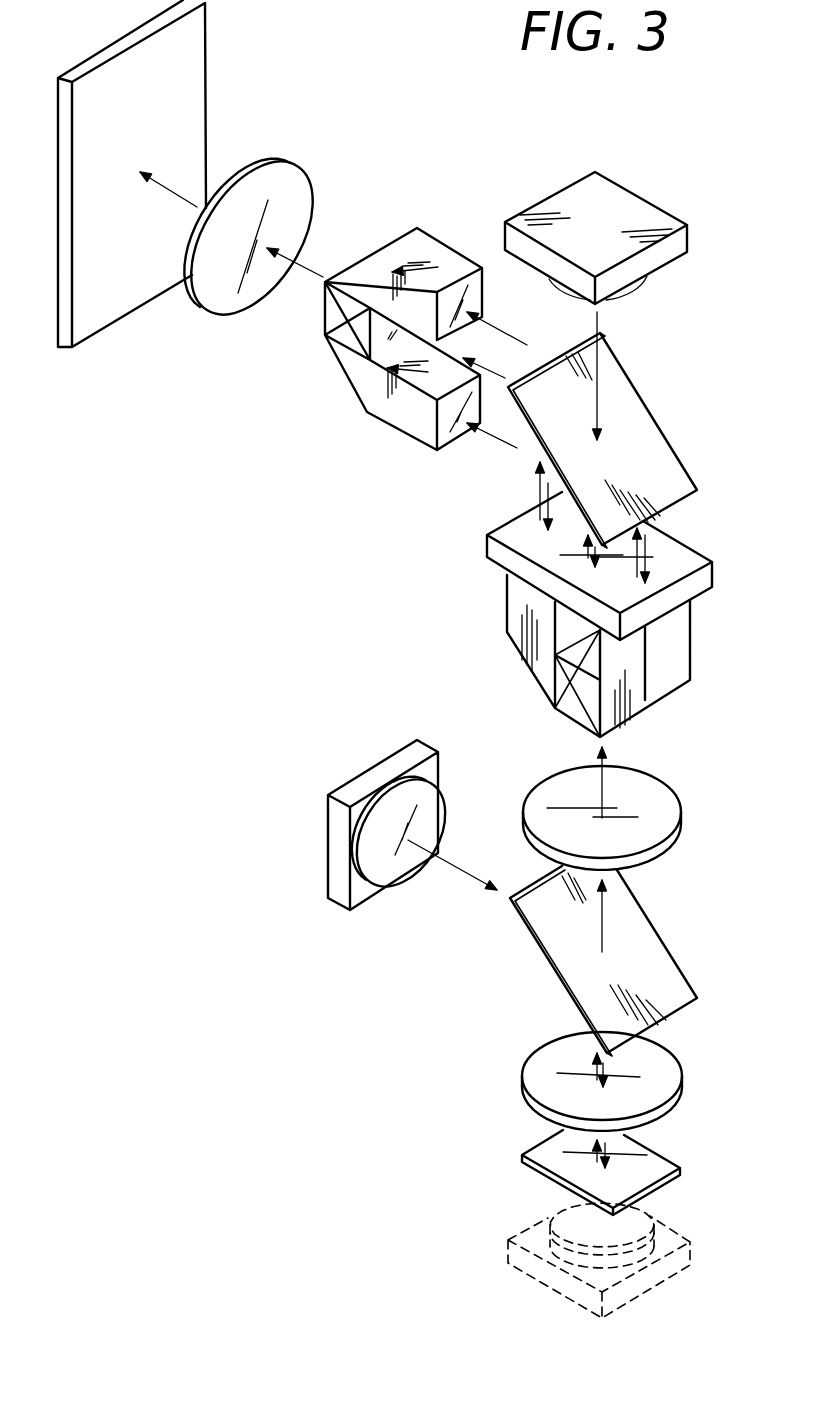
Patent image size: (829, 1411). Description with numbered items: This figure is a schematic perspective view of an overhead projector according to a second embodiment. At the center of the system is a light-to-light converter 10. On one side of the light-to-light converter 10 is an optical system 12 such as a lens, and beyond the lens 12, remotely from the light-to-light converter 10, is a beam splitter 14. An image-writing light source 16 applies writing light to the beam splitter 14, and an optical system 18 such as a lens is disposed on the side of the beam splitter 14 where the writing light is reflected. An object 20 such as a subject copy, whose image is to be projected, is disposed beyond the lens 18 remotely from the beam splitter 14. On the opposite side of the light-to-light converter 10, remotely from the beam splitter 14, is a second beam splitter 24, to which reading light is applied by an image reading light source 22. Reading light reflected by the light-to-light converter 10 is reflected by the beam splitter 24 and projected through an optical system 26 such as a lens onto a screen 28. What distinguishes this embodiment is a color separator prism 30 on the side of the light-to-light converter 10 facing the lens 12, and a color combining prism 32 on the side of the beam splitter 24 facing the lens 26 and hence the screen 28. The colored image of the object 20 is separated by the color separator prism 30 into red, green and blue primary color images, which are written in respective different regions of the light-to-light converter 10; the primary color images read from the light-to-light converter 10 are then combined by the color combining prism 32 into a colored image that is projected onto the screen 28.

The light-to-light converter 10 is at (682, 553).
The optical system (lens) 12 is at (642, 790).
The beam splitter 14 is at (645, 932).
The image-writing light source 16 is at (392, 760).
The optical system (lens) 18 is at (657, 1062).
The object 20 is at (650, 1152).
The image reading light source 22 is at (682, 240).
The beam splitter 24 is at (632, 403).
The optical system (lens) 26 is at (293, 187).
The screen 28 is at (197, 77).
The color separator prism 30 is at (680, 647).
The color combining prism 32 is at (428, 245).